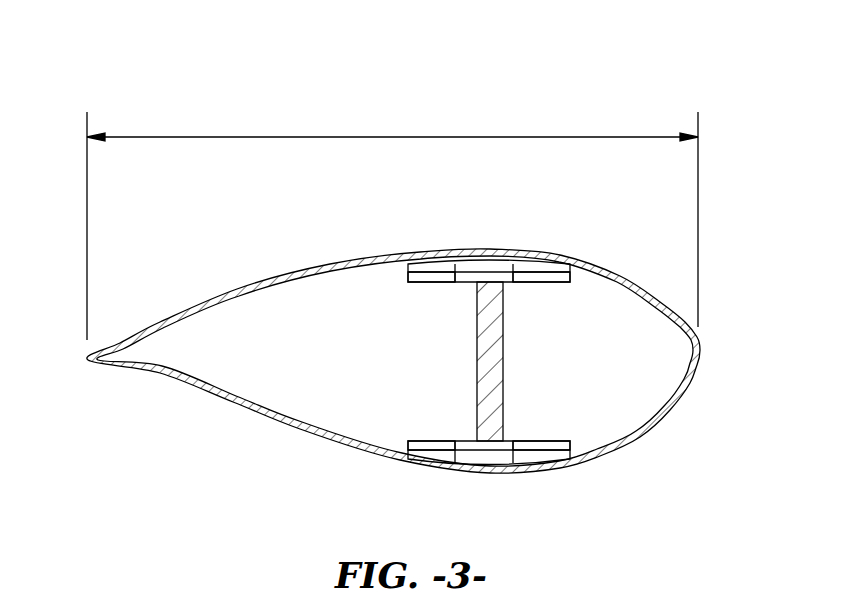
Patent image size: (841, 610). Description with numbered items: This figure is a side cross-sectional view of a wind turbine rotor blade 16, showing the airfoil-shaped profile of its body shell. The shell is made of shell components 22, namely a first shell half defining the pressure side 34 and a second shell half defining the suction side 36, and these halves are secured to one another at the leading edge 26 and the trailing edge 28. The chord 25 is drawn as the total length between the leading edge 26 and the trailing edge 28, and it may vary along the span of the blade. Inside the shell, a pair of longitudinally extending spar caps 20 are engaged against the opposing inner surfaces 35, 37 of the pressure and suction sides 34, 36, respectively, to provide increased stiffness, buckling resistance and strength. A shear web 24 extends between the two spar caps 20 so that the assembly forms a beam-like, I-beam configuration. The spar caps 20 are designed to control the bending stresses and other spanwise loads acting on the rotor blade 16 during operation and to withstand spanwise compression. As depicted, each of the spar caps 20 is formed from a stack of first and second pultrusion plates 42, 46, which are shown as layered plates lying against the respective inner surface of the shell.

The rotor blade 16 is at (623, 103).
The spar caps 20 is at (528, 258).
The shell components 22 is at (447, 243).
The shear web 24 is at (503, 405).
The chord 25 is at (290, 137).
The leading edge 26 is at (703, 351).
The trailing edge 28 is at (88, 360).
The pressure side 34 is at (313, 436).
The inner surface of pressure side 35 is at (232, 398).
The suction side 36 is at (323, 265).
The inner surface of suction side 37 is at (256, 296).
The first pultrusion plate 42 is at (540, 283).
The second pultrusion plate 46 is at (428, 284).